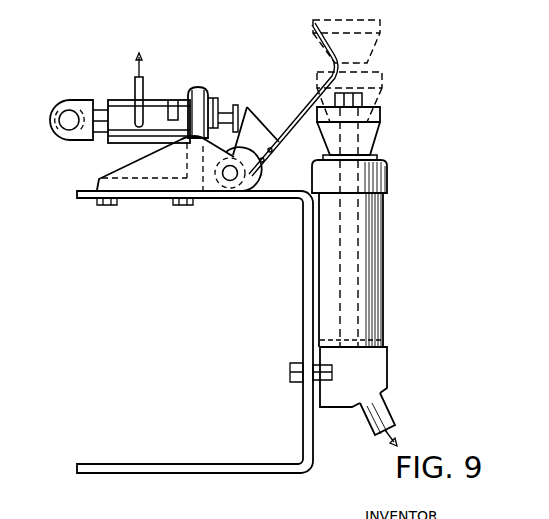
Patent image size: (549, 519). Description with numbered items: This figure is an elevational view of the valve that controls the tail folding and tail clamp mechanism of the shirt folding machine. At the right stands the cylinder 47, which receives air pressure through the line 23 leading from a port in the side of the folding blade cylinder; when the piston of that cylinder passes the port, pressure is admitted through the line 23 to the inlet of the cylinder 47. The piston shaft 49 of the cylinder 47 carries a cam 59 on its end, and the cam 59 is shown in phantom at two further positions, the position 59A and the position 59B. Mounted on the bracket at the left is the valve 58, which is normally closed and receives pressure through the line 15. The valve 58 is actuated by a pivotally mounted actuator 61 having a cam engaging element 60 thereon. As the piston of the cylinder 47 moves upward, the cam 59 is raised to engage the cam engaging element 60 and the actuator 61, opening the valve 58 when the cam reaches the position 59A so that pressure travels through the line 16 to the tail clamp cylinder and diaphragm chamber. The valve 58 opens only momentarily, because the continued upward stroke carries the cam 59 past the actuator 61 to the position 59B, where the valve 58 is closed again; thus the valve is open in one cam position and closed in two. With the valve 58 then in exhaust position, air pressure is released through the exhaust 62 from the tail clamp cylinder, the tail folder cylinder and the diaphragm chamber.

The line 15 is at (78, 113).
The valve 58 is at (122, 104).
The line 16 is at (144, 86).
The exhaust 62 is at (176, 103).
The pivotally mounted actuator 61 is at (258, 120).
The cam engaging element 60 is at (320, 40).
The cam position 59B is at (379, 31).
The cam position 59A is at (379, 75).
The cam 59 is at (377, 119).
The piston shaft 49 is at (360, 222).
The cylinder 47 is at (383, 255).
The line 23 is at (382, 398).